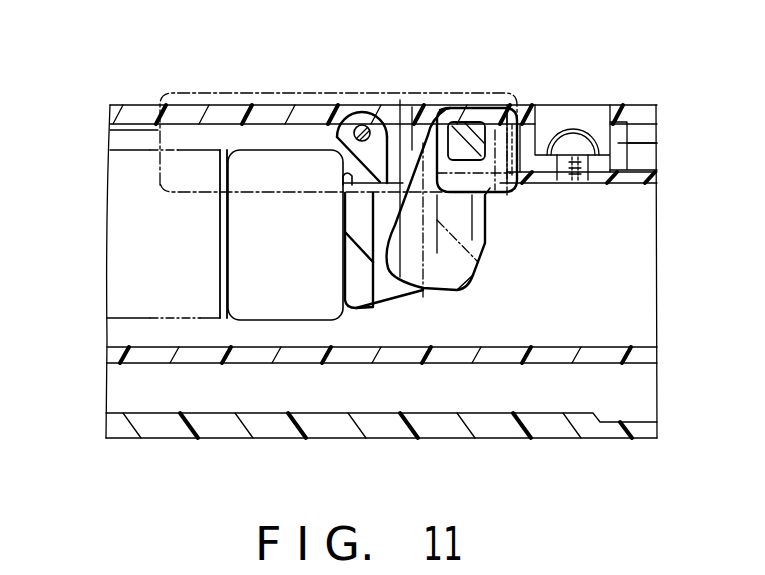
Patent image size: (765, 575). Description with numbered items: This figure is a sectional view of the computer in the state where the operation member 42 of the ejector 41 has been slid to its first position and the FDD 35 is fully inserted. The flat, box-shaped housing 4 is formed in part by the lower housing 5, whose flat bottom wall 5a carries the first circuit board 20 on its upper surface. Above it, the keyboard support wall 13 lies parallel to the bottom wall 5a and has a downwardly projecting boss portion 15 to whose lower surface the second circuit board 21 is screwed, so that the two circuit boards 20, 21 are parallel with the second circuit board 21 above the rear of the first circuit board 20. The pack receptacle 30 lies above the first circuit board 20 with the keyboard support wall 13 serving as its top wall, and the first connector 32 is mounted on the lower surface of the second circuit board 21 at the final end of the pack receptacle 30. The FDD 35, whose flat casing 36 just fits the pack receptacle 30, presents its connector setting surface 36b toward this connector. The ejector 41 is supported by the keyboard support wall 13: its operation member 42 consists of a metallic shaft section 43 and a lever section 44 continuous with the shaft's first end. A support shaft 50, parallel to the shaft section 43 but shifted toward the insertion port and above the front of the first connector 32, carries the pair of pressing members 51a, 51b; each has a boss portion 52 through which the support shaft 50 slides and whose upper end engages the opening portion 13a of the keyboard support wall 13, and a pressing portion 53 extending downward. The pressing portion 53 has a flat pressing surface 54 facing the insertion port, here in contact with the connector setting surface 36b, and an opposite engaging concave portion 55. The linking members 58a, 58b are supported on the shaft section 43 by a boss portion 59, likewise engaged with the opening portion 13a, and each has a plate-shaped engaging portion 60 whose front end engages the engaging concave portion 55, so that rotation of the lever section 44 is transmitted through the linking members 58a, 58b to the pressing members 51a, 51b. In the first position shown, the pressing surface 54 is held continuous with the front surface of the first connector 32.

The housing 4 is at (137, 105).
The lower housing 5 is at (603, 440).
The bottom wall 5a is at (330, 428).
The keyboard support wall 13 is at (643, 107).
The opening portion 13a is at (337, 107).
The boss portion 15 is at (622, 143).
The first circuit board 20 is at (635, 352).
The second circuit board 21 is at (633, 190).
The pack receptacle 30 is at (157, 337).
The first connector 32 is at (350, 257).
The floppy disk drive device (FDD) 35 is at (148, 210).
The casing 36 is at (110, 297).
The connector setting surface 36b is at (340, 184).
The ejector 41 is at (450, 110).
The operation member 42 is at (507, 117).
The shaft section 43 is at (490, 188).
The lever section 44 is at (205, 93).
The support shaft 50 is at (362, 107).
The pressing member 51a is at (445, 257).
The pressing member 51b is at (395, 302).
The boss portion 52 is at (389, 98).
The pressing portion 53 is at (363, 310).
The pressing surface 54 is at (343, 285).
The engaging concave portion 55 is at (413, 107).
The linking member 58a is at (544, 246).
The linking member 58b is at (487, 240).
The boss portion 59 is at (500, 108).
The engaging portion 60 is at (457, 272).